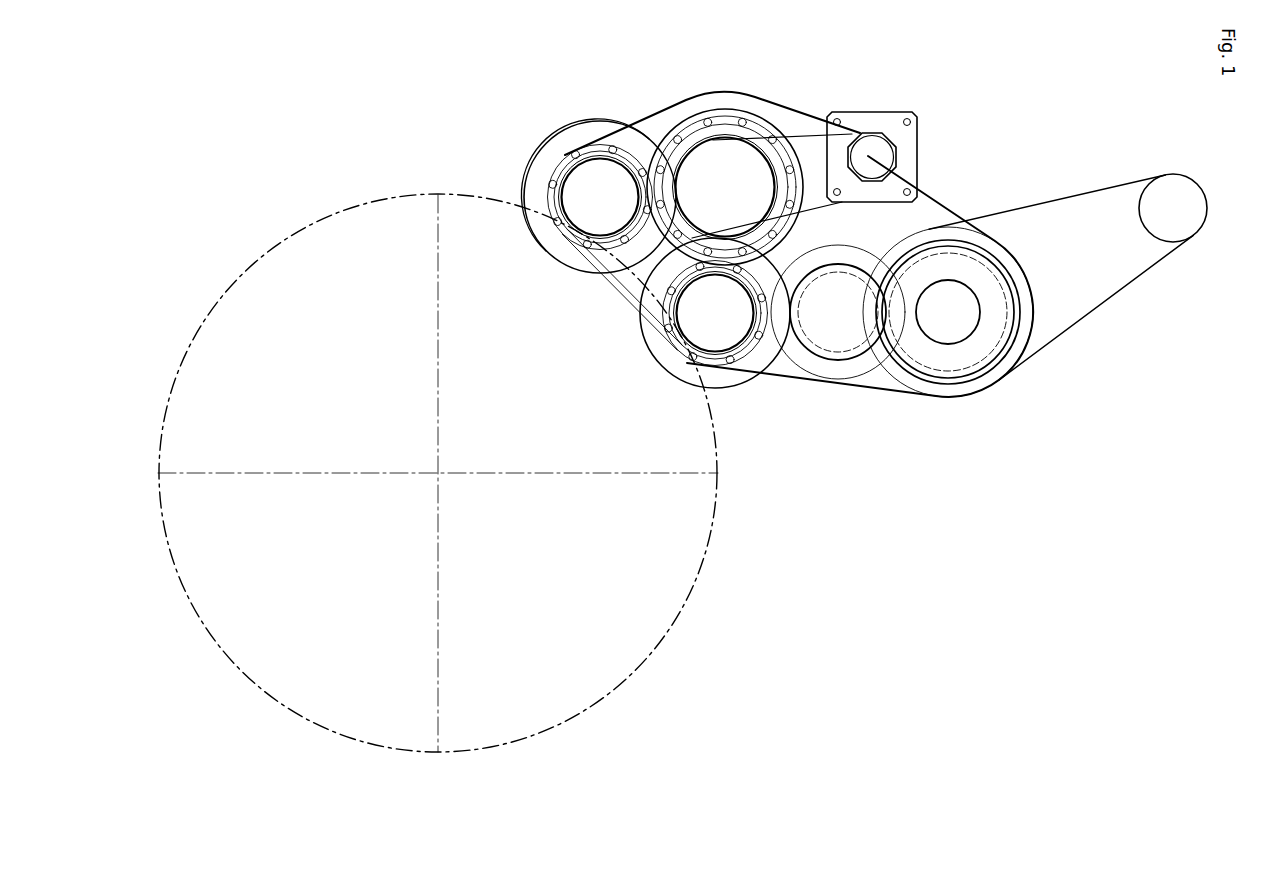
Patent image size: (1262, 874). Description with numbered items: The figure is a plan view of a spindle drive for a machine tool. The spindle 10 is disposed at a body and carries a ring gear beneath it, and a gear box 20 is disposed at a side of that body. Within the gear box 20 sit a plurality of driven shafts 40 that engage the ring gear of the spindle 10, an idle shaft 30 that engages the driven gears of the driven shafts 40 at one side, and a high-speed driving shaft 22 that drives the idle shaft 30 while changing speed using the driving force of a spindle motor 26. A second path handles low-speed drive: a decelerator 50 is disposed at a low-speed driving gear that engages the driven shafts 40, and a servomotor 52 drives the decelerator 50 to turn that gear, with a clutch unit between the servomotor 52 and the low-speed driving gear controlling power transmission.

The spindle 10 is at (632, 632).
The gear box 20 is at (940, 195).
The high-speed driving shaft 22 is at (975, 348).
The spindle motor 26 is at (1150, 200).
The idle shaft 30 is at (836, 342).
The driven shaft 40 is at (580, 173).
The decelerator 50 is at (697, 160).
The servomotor 52 is at (872, 148).